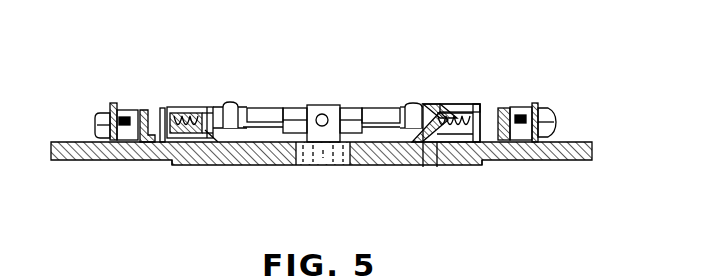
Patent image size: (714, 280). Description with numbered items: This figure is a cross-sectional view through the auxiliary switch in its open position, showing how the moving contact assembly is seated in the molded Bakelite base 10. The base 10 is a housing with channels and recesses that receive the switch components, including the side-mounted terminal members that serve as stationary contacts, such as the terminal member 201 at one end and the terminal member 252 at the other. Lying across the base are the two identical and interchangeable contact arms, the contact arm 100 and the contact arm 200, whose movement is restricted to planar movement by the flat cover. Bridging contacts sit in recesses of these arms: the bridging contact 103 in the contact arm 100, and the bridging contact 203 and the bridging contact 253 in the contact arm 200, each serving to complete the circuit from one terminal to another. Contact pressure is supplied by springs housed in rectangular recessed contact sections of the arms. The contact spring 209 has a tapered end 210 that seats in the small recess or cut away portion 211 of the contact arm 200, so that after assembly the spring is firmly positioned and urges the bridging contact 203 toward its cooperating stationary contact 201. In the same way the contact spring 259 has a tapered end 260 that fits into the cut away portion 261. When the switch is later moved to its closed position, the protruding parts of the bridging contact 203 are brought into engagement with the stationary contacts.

The molded Bakelite base 10 is at (582, 163).
The contact arm 100 is at (332, 110).
The bridging contact 103 is at (294, 107).
The contact arm 200 is at (265, 132).
The terminal member 201 is at (500, 110).
The bridging contact 203 is at (478, 104).
The contact pressure spring 209 is at (477, 160).
The tapered end 210 is at (435, 165).
The cut away portion 211 is at (425, 170).
The terminal member 252 is at (163, 110).
The bridging contact 253 is at (167, 108).
The contact pressure spring 259 is at (187, 166).
The tapered end 260 is at (190, 136).
The cut away portion 261 is at (213, 133).